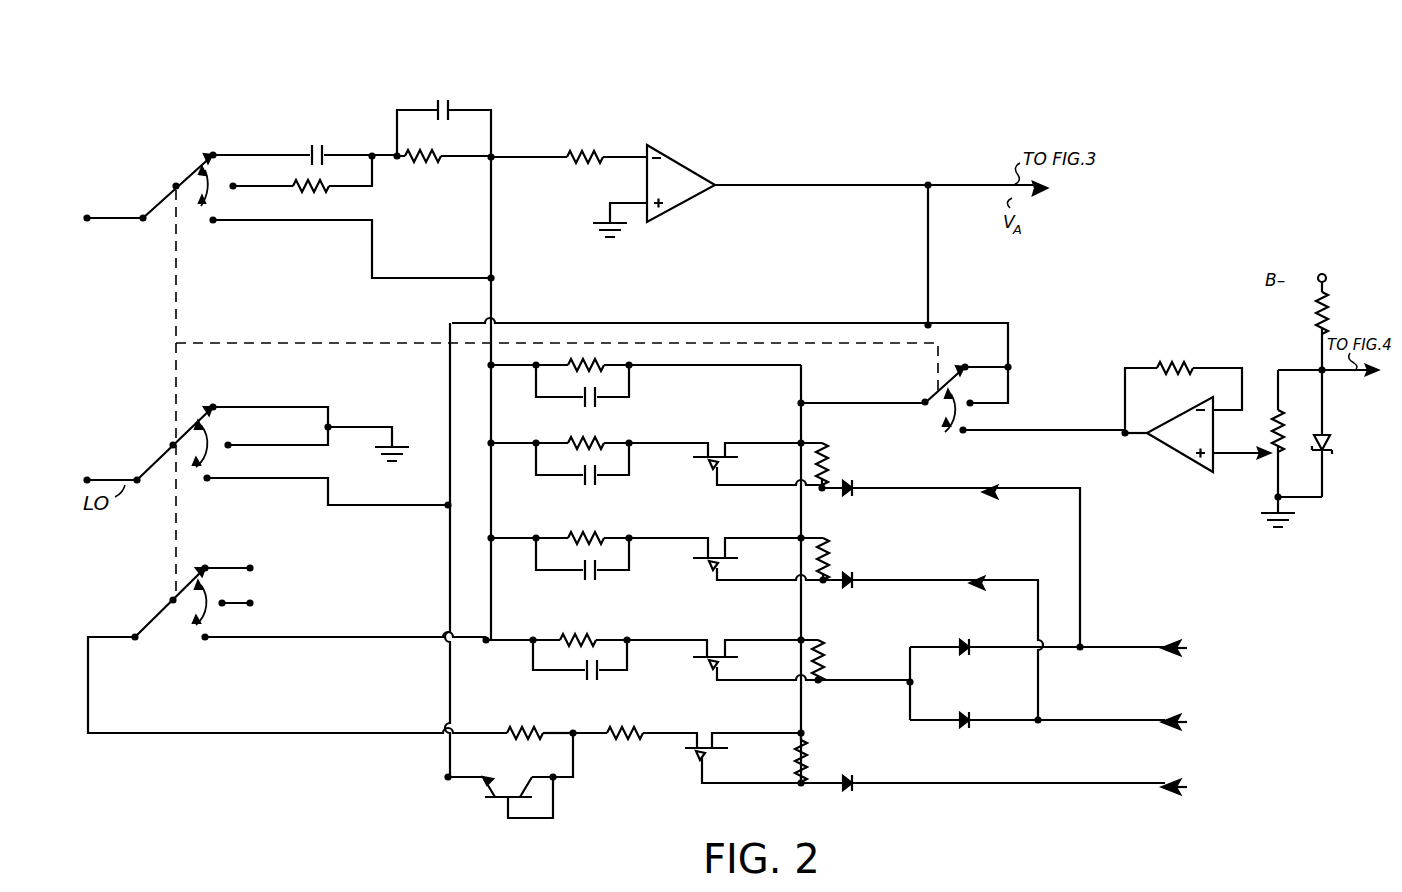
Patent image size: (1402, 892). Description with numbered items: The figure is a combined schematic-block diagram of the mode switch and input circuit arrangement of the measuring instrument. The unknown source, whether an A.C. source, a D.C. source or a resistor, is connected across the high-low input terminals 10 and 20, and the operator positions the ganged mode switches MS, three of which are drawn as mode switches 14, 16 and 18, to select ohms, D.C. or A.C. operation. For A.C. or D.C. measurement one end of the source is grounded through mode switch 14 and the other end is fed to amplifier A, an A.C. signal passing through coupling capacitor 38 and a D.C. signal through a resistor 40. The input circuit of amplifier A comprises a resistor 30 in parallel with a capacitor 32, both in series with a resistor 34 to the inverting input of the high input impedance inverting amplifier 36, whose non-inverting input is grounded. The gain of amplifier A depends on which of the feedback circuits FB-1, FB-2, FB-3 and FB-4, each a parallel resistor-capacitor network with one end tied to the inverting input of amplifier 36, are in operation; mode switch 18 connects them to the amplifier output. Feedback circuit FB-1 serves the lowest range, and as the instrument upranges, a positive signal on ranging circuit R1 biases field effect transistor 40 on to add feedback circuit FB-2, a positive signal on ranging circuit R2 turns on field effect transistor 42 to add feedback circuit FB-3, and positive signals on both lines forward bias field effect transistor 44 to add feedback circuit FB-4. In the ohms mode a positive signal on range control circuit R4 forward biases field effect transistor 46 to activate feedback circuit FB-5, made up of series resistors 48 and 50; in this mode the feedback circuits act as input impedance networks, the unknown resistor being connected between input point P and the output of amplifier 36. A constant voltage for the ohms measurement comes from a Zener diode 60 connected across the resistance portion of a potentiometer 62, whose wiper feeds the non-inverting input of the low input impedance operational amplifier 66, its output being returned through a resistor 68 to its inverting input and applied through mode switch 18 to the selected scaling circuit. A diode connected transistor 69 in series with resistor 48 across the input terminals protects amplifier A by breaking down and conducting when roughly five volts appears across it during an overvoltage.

The high input terminal 10 is at (113, 235).
The mode switch 14 is at (194, 418).
The mode switch 16 is at (192, 576).
The mode switch 18 is at (938, 388).
The low input terminal 20 is at (89, 474).
The resistor 30 is at (425, 165).
The capacitor 32 is at (445, 100).
The resistor 34 is at (588, 164).
The inverting amplifier 36 is at (686, 158).
The coupling capacitor 38 is at (316, 145).
The resistor / field effect transistor 40 is at (318, 193).
The field effect transistor 42 is at (722, 569).
The field effect transistor 44 is at (722, 668).
The field effect transistor 46 is at (706, 760).
The resistor 48 is at (527, 735).
The resistor 50 is at (644, 735).
The Zener diode 60 is at (1328, 443).
The potentiometer 62 is at (1268, 474).
The operational amplifier 66 is at (1175, 440).
The resistor 68 is at (1180, 368).
The diode connected transistor 69 is at (512, 796).
The mode switches MS is at (310, 94).
The amplifier A is at (773, 134).
The input point P is at (495, 162).
The feedback circuit FB-1 is at (622, 400).
The feedback circuit FB-2 is at (600, 478).
The feedback circuit FB-3 is at (603, 574).
The feedback circuit FB-4 is at (610, 674).
The feedback circuit FB-5 is at (625, 740).
The ranging circuit R1 is at (1185, 646).
The ranging circuit R2 is at (1185, 720).
The range control circuit R4 is at (1185, 785).